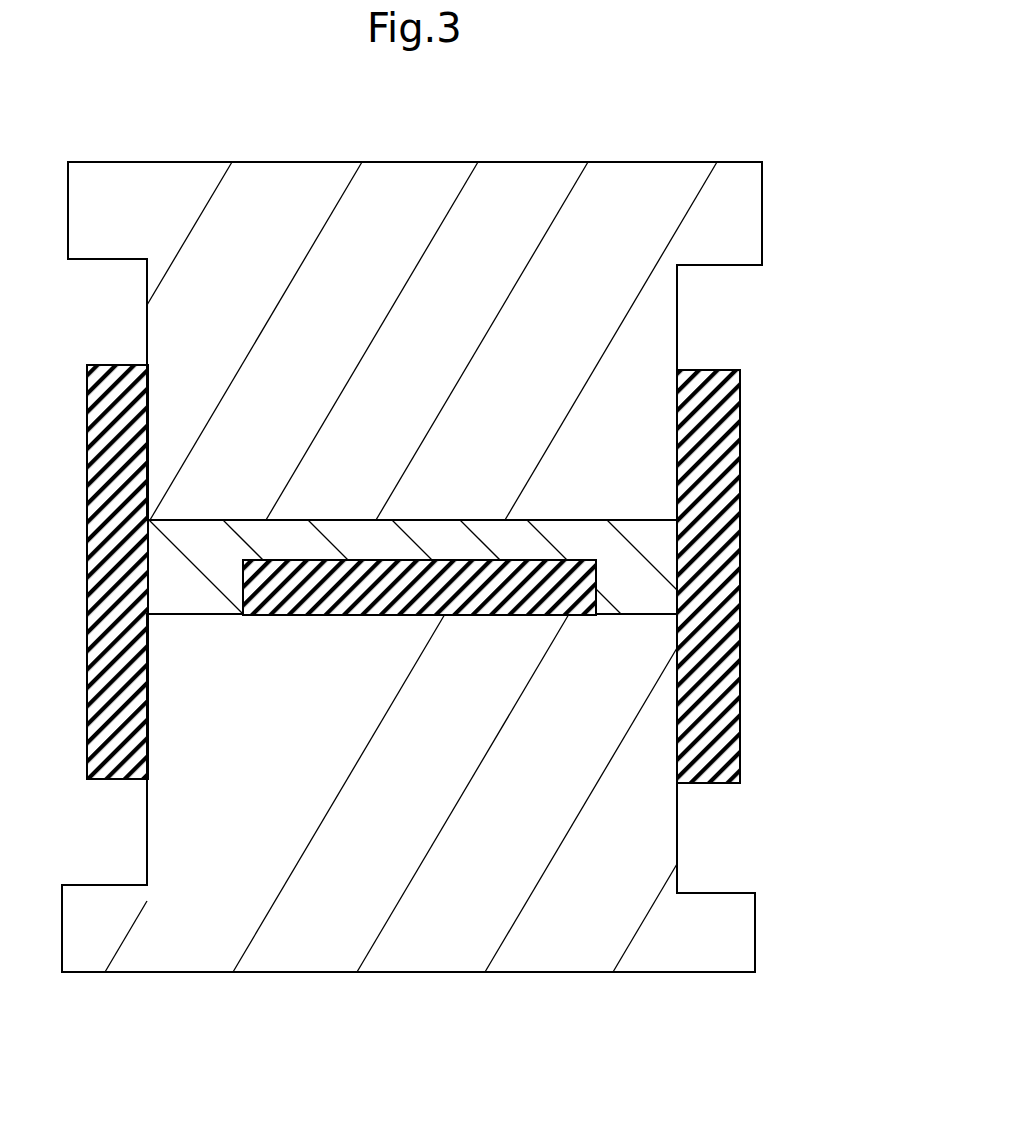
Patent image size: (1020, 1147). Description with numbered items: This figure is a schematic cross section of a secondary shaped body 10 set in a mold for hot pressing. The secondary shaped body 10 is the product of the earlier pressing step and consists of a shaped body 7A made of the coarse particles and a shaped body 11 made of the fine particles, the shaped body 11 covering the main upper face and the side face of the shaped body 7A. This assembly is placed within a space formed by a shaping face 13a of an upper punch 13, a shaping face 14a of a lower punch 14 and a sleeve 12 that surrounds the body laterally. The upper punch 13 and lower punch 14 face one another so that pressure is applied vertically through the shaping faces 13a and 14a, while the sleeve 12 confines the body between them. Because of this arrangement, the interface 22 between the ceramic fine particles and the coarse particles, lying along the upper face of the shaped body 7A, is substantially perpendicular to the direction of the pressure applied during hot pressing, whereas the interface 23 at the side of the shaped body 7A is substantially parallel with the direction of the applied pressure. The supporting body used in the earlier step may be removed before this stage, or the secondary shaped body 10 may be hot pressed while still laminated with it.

The upper punch 13 is at (778, 217).
The shaping face of the upper punch 13a is at (494, 527).
The lower punch 14 is at (702, 853).
The shaping face of the lower punch 14a is at (641, 620).
The sleeve 12 is at (713, 608).
The secondary shaped body 10 is at (593, 527).
The shaped body made of the fine particles 11 is at (249, 532).
The interface of the ceramic fine particles and coarse particles 22 is at (398, 558).
The shaped body made of the coarse particles 7A is at (343, 560).
The interface 23 is at (247, 598).